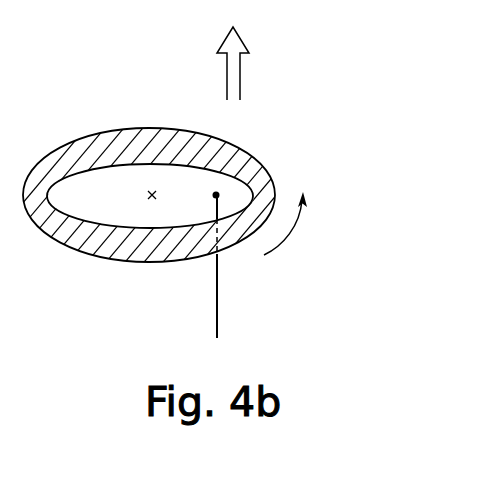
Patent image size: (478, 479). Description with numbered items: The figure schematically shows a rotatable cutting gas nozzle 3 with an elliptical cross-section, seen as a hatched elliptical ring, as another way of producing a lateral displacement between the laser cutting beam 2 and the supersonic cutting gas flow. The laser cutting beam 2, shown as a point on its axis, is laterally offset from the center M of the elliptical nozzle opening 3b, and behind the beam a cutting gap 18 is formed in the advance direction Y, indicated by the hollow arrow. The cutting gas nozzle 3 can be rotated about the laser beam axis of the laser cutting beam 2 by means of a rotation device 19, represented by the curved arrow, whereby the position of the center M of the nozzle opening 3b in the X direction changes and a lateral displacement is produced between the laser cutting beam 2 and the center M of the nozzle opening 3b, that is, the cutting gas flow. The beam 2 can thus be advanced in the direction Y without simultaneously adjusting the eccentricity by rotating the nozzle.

The cutting gas nozzle 3 is at (212, 147).
The elliptical nozzle opening 3b is at (102, 186).
The center of the nozzle opening M is at (152, 193).
The advance direction Y is at (229, 82).
The laser cutting beam 2 is at (219, 194).
The cutting gap 18 is at (219, 320).
The rotation device 19 is at (288, 235).